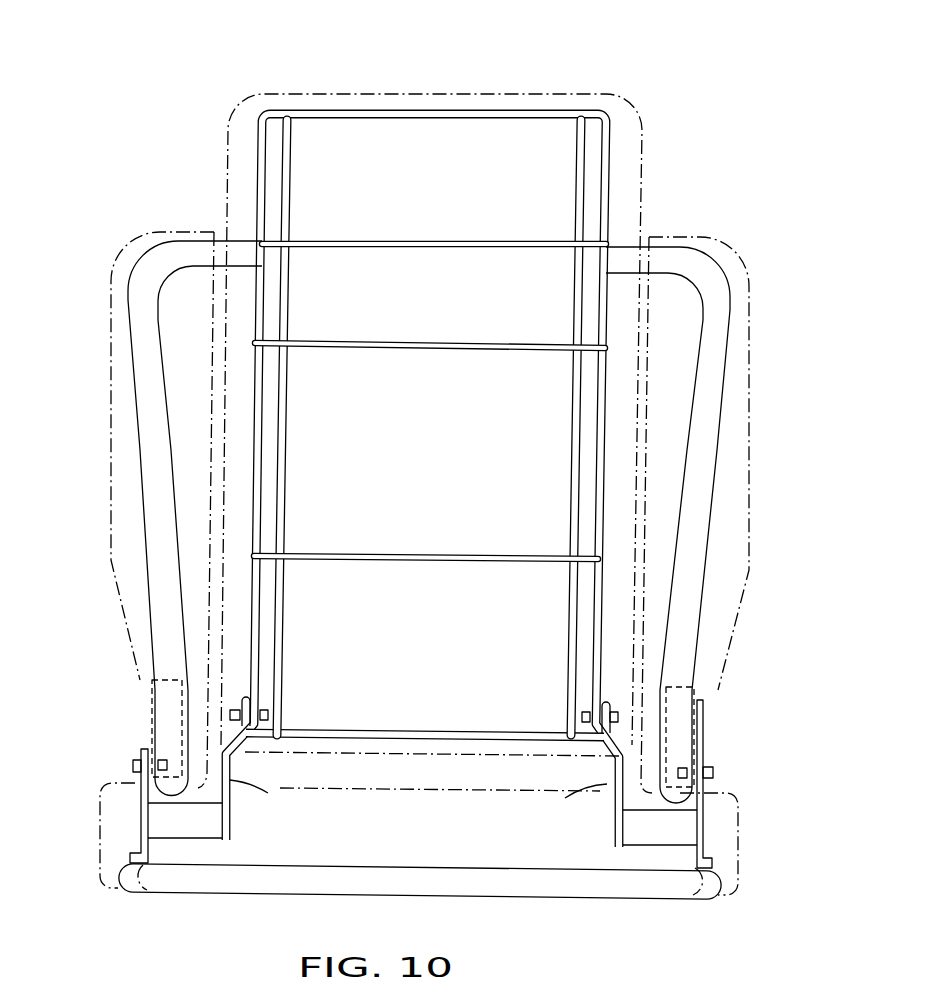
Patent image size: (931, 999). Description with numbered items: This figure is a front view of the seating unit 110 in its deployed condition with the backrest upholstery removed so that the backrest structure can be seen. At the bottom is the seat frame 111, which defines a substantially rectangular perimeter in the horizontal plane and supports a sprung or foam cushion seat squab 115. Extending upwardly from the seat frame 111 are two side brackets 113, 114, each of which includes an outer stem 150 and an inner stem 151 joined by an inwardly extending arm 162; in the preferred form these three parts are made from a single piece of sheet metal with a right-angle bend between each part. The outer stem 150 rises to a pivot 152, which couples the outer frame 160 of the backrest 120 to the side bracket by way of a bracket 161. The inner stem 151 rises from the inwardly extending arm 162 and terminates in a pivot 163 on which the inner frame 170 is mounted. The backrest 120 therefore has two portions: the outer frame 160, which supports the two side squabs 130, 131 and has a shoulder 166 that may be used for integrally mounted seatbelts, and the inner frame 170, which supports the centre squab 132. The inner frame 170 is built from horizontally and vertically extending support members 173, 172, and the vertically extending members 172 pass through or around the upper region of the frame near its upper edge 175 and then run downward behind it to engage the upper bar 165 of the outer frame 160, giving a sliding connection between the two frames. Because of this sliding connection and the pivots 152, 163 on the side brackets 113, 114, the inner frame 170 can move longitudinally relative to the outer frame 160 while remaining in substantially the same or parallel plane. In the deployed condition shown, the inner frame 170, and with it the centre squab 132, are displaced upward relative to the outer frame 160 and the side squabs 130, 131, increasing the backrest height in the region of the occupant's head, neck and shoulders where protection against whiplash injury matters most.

The seating unit 110 is at (652, 70).
The seat frame 111 is at (545, 886).
The side bracket 113 is at (703, 843).
The side bracket 114 is at (135, 846).
The seat squab 115 is at (402, 790).
The backrest 120 is at (127, 233).
The side squab 130 is at (748, 437).
The side squab 131 is at (108, 424).
The centre squab 132 is at (234, 88).
The outer stem 150 is at (148, 820).
The inner stem 151 is at (240, 796).
The pivot 152 is at (133, 766).
The outer frame 160 is at (698, 552).
The bracket 161 is at (150, 695).
The inwardly extending arm 162 is at (210, 828).
The pivot 163 is at (263, 715).
The upper bar 165 is at (501, 242).
The shoulder 166 is at (700, 273).
The inner frame 170 is at (612, 122).
The vertically extending support member 172 is at (430, 145).
The horizontally extending support member 173 is at (507, 352).
The upper edge 175 is at (508, 104).